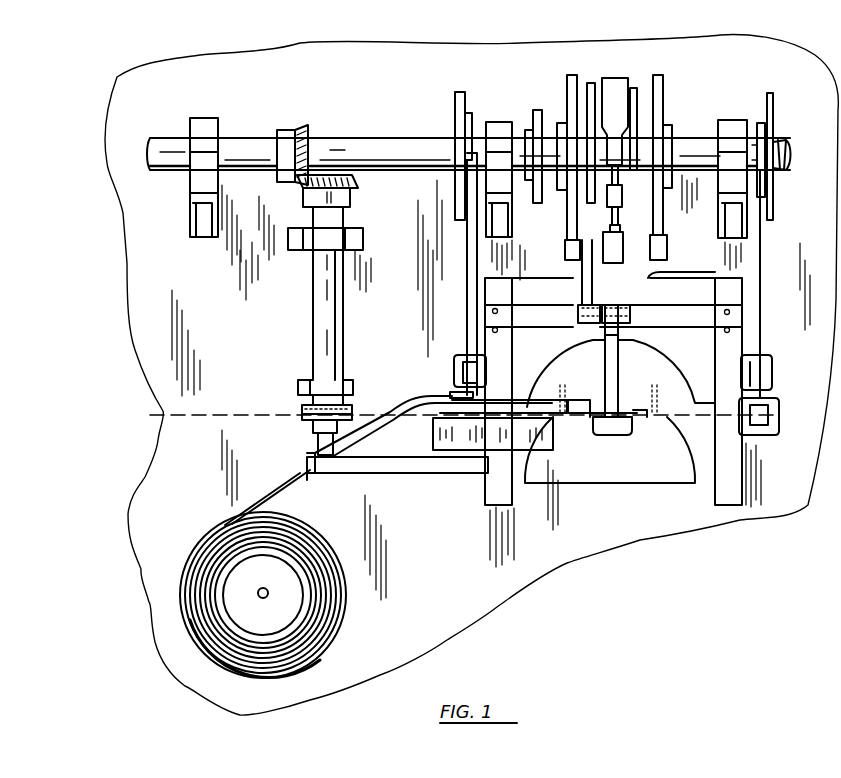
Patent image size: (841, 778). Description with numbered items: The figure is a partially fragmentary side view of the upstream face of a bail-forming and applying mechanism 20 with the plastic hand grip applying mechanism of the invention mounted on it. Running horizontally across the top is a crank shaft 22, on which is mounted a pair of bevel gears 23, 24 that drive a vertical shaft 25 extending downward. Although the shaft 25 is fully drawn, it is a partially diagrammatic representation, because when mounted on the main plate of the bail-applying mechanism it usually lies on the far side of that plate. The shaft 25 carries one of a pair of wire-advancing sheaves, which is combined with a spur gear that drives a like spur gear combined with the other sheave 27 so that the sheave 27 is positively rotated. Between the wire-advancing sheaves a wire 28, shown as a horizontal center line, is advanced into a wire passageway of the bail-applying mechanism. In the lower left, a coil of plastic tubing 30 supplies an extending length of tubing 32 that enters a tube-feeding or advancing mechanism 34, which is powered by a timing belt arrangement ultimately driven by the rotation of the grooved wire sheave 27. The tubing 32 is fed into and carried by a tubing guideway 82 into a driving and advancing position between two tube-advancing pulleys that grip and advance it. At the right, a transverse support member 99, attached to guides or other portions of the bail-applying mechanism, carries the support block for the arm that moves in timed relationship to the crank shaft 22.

The bail-applying mechanism 20 is at (49, 158).
The crank shaft 22 is at (246, 145).
The bevel gear 23 is at (302, 130).
The bevel gear 24 is at (353, 186).
The vertical shaft 25 is at (318, 325).
The wire-advancing sheave 27 is at (350, 410).
The wire 28 is at (253, 415).
The coil of plastic tubing 30 is at (308, 547).
The tubing 32 is at (278, 488).
The tube-feeding mechanism 34 is at (455, 488).
The tubing guideway 82 is at (433, 412).
The transverse support member 99 is at (702, 320).